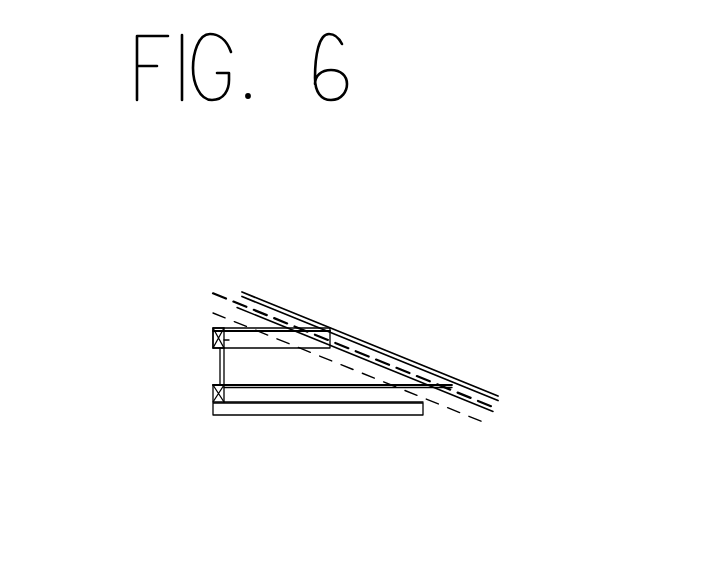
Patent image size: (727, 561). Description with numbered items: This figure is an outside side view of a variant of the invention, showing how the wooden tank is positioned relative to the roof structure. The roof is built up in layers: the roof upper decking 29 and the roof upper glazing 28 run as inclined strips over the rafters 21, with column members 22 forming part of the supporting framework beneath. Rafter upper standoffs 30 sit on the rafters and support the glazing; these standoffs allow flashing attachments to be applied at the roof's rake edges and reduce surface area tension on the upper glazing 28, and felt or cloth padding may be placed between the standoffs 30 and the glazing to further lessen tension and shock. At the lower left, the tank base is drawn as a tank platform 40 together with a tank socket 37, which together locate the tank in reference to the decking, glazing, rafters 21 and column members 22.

The rafters 21 is at (220, 296).
The roof upper decking 29 is at (302, 317).
The roof upper glazing 28 is at (465, 383).
The rafter upper standoffs 30 is at (465, 403).
The column members 22 is at (487, 417).
The tank socket 37 is at (203, 402).
The tank platform 40 is at (210, 412).